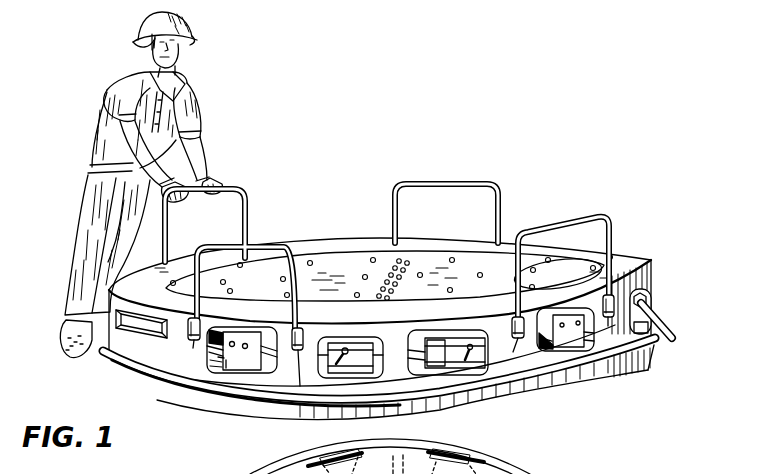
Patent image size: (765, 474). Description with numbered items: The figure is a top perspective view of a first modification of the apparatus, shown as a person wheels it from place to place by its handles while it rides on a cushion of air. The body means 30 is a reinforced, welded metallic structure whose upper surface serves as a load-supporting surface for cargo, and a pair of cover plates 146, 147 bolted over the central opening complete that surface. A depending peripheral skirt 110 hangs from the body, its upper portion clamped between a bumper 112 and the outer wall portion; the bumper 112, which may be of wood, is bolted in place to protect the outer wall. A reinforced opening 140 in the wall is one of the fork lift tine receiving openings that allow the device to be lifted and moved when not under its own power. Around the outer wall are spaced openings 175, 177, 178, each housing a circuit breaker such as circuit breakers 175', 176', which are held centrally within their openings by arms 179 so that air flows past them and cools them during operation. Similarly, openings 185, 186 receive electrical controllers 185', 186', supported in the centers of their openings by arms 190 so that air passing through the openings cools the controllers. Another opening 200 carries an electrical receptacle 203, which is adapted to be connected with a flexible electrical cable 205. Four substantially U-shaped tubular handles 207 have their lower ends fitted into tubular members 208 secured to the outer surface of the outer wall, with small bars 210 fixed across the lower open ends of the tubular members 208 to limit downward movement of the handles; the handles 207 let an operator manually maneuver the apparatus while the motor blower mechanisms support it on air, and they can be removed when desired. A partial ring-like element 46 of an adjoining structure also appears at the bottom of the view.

The body means 30 is at (652, 256).
The rotary lid assembly 46 is at (267, 473).
The skirt 110 is at (653, 372).
The bumper 112 is at (147, 371).
The reinforced opening 140 is at (128, 312).
The cover plate 146 is at (340, 266).
The cover plate 147 is at (422, 265).
The opening 175 is at (474, 382).
The circuit breaker 175' is at (455, 331).
The circuit breaker 176' is at (368, 341).
The opening 177 is at (484, 460).
The opening 178 is at (377, 446).
The arms 179 is at (377, 369).
The opening 185 is at (588, 358).
The electrical controller 185' is at (557, 274).
The opening 186 is at (242, 364).
The electrical controller 186' is at (244, 323).
The arms 190 is at (219, 358).
The opening 200 is at (652, 334).
The electrical receptacle 203 is at (649, 283).
The flexible electrical cable 205 is at (673, 334).
The U-shaped tubular handles 207 is at (262, 245).
The tubular members 208 is at (203, 330).
The small bars 210 is at (190, 343).